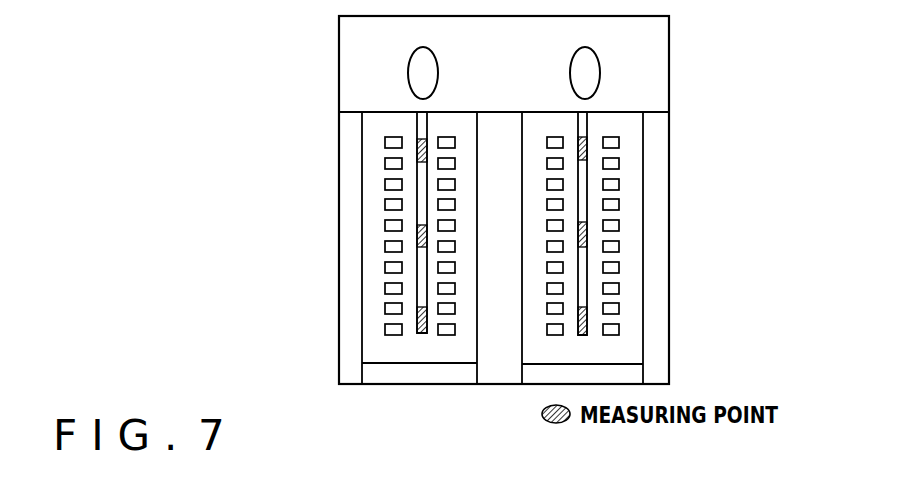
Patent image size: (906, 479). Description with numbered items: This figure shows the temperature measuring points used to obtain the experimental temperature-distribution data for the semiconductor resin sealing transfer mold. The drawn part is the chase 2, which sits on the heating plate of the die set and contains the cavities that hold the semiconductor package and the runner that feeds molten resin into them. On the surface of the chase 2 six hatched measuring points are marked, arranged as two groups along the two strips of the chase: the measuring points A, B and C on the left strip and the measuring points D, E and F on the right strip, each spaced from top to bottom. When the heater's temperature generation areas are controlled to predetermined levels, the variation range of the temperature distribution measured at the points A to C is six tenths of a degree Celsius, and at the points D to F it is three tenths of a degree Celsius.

The chase 2 is at (660, 55).
The measuring point A is at (418, 143).
The measuring point B is at (417, 238).
The measuring point C is at (418, 323).
The measuring point D is at (588, 151).
The measuring point E is at (588, 236).
The measuring point F is at (586, 321).